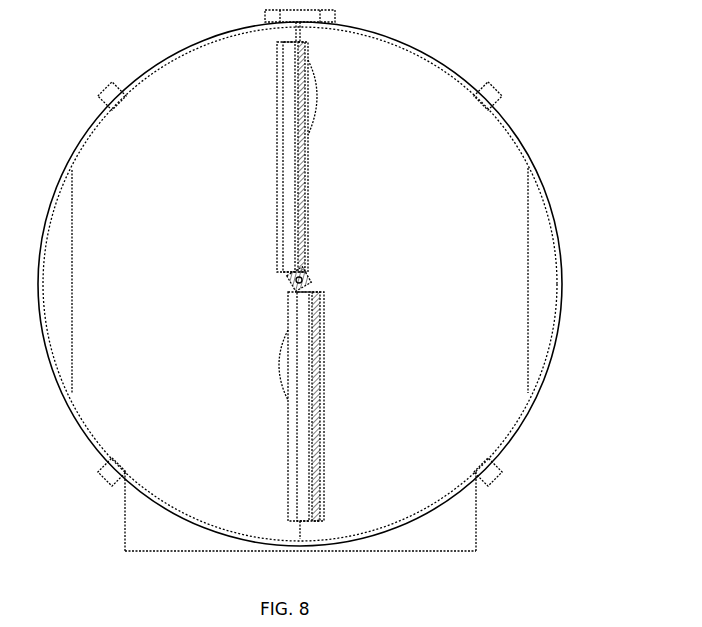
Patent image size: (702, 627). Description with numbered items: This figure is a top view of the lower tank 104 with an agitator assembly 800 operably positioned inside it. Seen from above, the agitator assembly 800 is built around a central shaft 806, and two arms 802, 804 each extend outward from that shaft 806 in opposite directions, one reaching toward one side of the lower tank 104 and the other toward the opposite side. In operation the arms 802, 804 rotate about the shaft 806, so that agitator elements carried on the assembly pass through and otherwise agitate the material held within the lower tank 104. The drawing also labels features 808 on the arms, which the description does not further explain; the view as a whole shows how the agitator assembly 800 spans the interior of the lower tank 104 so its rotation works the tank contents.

The lower tank 104 is at (524, 148).
The agitator assembly 800 is at (310, 234).
The arm 802 is at (330, 452).
The arm 804 is at (307, 156).
The shaft 806 is at (308, 282).
The bump stop 808 is at (318, 92).